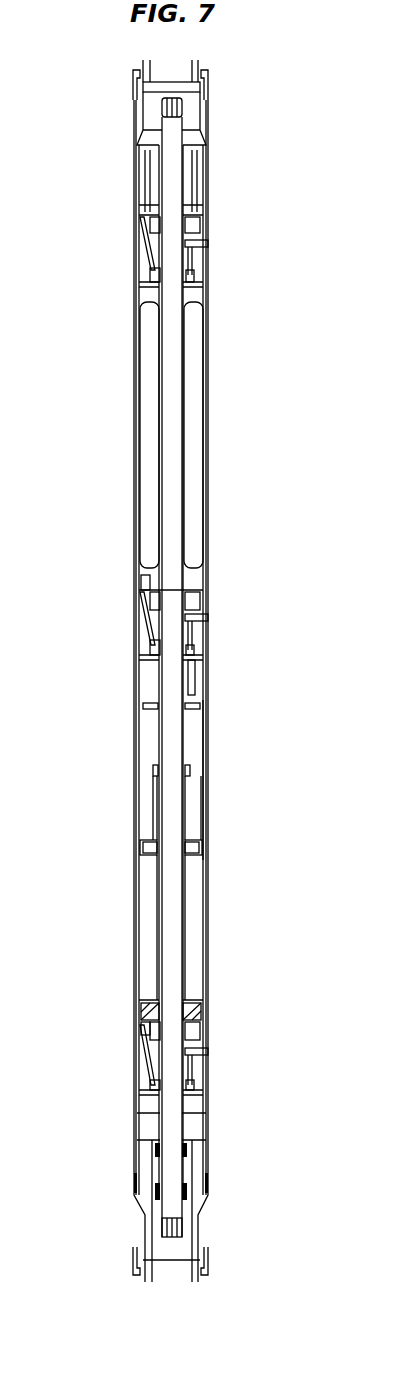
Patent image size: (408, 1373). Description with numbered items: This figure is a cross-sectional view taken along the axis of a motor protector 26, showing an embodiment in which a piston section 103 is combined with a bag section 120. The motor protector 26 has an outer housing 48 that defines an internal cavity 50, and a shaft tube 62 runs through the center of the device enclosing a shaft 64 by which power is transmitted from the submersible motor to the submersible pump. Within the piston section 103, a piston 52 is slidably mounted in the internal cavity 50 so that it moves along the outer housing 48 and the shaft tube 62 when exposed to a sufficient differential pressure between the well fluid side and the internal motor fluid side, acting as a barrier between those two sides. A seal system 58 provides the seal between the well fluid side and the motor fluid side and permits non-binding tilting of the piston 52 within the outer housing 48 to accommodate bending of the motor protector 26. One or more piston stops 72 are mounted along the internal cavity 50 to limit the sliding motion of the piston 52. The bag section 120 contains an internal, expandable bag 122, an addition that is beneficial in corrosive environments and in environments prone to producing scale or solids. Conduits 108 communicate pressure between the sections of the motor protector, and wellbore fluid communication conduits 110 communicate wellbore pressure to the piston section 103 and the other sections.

The motor protector 26 is at (104, 146).
The outer housing 48 is at (210, 740).
The internal cavity 50 is at (143, 795).
The piston 52 is at (196, 838).
The seal system 58 is at (153, 770).
The shaft tube 62 is at (186, 930).
The shaft 64 is at (172, 965).
The piston stop 72 is at (143, 706).
The piston section 103 is at (228, 769).
The conduit 108 is at (143, 612).
The wellbore fluid communication conduit 110 is at (140, 242).
The bag section 120 is at (228, 413).
The expandable bag 122 is at (137, 455).